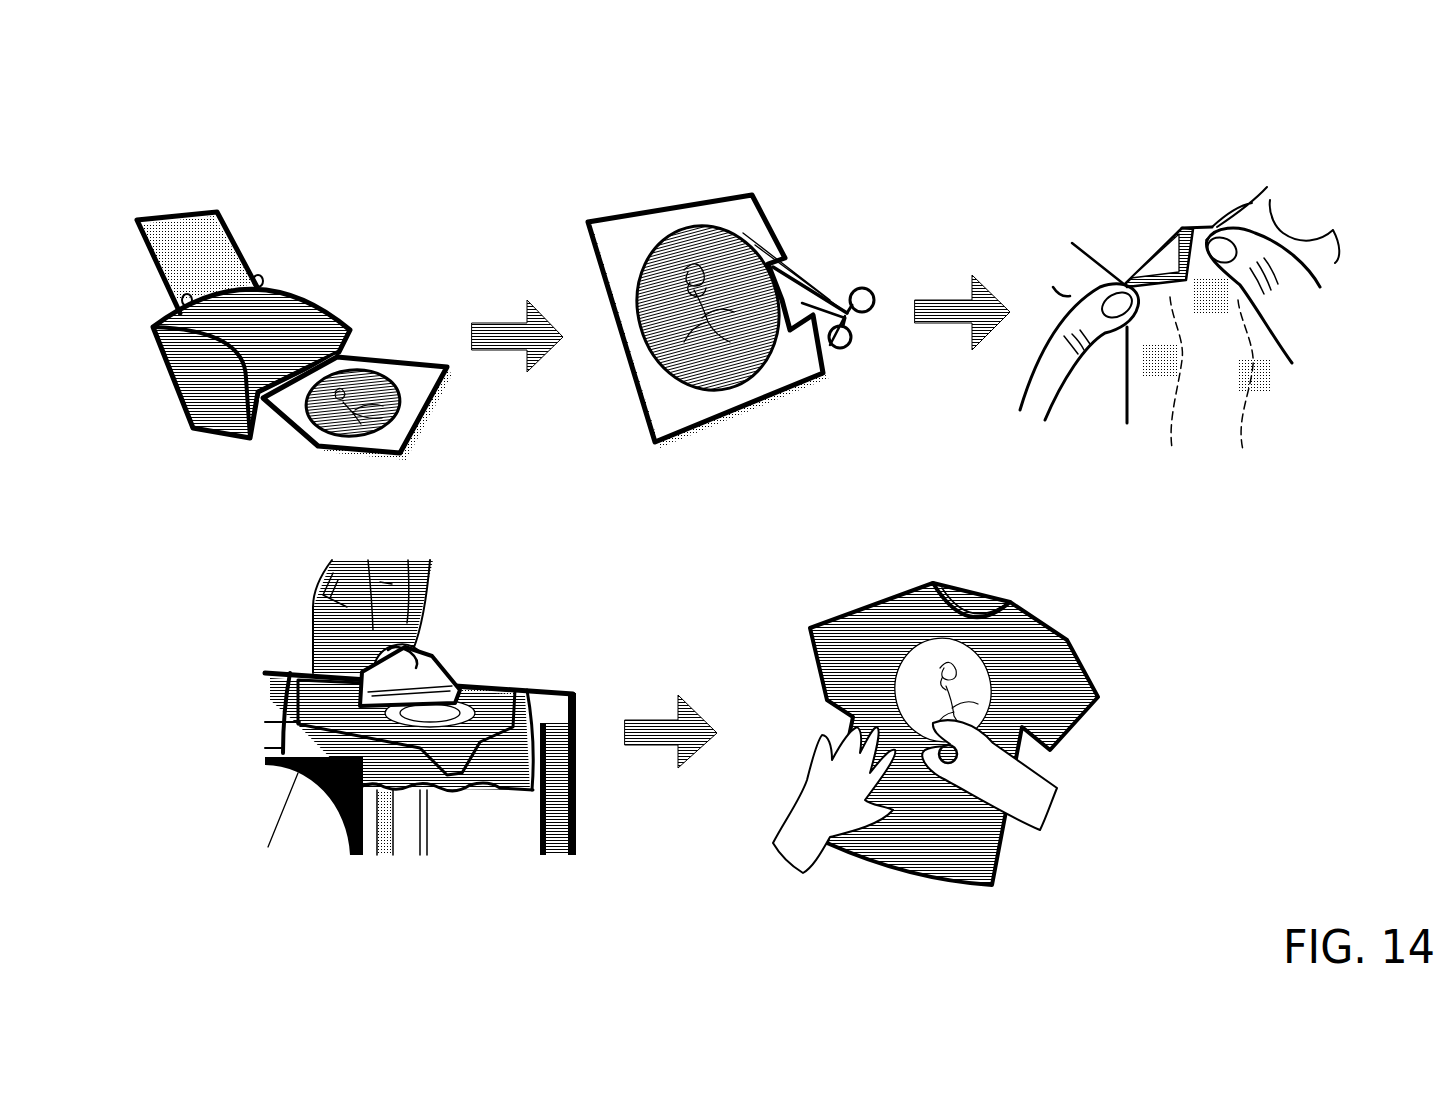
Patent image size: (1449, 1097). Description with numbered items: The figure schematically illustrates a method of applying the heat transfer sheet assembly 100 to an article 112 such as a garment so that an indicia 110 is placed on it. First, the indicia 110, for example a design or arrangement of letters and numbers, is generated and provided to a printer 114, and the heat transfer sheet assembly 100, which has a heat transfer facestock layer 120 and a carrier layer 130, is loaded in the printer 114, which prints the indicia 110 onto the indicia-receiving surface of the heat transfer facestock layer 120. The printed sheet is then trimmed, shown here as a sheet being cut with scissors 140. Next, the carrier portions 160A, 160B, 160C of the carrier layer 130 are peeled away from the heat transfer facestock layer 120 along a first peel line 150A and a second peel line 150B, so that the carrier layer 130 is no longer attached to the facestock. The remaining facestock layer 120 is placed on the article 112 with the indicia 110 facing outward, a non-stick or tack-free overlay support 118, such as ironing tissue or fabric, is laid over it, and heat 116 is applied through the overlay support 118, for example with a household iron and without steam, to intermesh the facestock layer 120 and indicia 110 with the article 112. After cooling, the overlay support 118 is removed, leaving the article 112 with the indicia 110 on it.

The heat transfer sheet assembly 100 is at (180, 100).
The indicia 110 is at (353, 383).
The article 112 is at (1052, 632).
The printer 114 is at (173, 380).
The heat 116 is at (433, 668).
The overlay support 118 is at (377, 720).
The heat transfer facestock layer 120 is at (1168, 257).
The carrier layer 130 is at (737, 285).
The cut transfer sheet with scissors 140 is at (731, 321).
The first peel line 150A is at (1168, 402).
The second peel line 150B is at (1247, 395).
The carrier portion 160A is at (1145, 342).
The carrier portion 160B is at (1210, 348).
The carrier portion 160C is at (1280, 403).